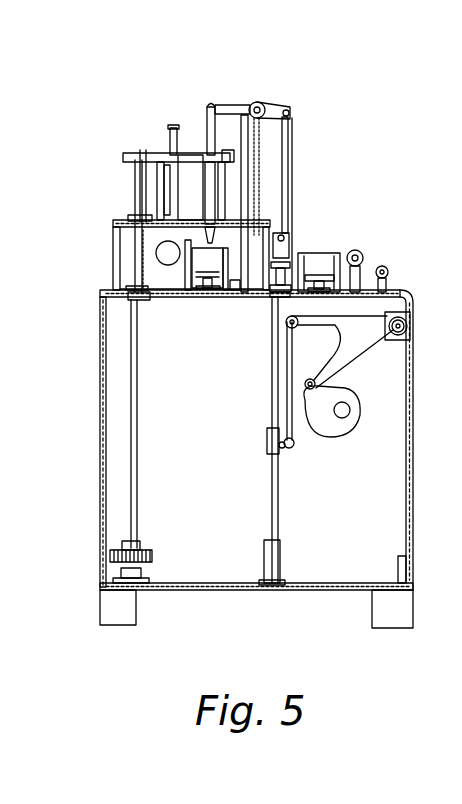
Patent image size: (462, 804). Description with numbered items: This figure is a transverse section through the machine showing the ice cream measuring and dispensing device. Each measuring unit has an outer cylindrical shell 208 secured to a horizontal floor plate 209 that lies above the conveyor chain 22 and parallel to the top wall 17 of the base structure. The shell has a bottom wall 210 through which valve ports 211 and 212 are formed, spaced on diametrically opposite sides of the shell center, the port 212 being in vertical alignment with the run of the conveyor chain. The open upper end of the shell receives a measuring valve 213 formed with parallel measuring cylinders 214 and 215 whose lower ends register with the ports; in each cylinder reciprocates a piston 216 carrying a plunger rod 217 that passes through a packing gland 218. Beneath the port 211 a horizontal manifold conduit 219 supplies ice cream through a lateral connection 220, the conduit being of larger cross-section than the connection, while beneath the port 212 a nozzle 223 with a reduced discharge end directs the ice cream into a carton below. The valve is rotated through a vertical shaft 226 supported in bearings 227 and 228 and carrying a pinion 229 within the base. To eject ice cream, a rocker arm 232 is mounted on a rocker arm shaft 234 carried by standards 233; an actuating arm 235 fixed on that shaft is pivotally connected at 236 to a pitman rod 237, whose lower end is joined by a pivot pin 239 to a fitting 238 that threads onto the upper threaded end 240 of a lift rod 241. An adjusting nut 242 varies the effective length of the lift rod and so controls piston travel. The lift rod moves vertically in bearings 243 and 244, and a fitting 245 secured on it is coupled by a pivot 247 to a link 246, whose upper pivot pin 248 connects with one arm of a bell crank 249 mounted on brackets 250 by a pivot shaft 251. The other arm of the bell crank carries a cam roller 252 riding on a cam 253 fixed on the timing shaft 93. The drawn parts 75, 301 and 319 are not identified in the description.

The top wall 17 is at (245, 290).
The conveyor chain 22 is at (210, 300).
The pulley 75 is at (192, 264).
The timing shaft 93 is at (345, 418).
The outer cylindrical shell 208 is at (163, 190).
The horizontal floor plate 209 is at (128, 218).
The bottom wall 210 is at (257, 120).
The valve port 211 is at (168, 222).
The valve port 212 is at (210, 232).
The measuring valve 213 is at (197, 150).
The measuring cylinder 214 is at (150, 160).
The measuring cylinder 215 is at (230, 162).
The piston 216 is at (160, 160).
The plunger rod 217 is at (172, 128).
The packing gland 218 is at (214, 150).
The manifold conduit 219 is at (140, 250).
The lateral connection 220 is at (158, 240).
The nozzle 223 is at (170, 243).
The vertical shaft 226 is at (138, 410).
The bearing 227 is at (142, 300).
The bearing 228 is at (142, 574).
The pinion 229 is at (160, 538).
The rocker arm 232 is at (249, 104).
The standard 233 is at (291, 180).
The rocker arm shaft 234 is at (263, 104).
The actuating arm 235 is at (273, 105).
The pivotal connection 236 is at (290, 114).
The pitman rod 237 is at (290, 155).
The fitting 238 is at (288, 262).
The pivot pin 239 is at (285, 237).
The upper threaded end 240 is at (312, 253).
The lift rod 241 is at (272, 355).
The adjusting nut 242 is at (216, 290).
The bearing 243 is at (287, 298).
The bearing 244 is at (280, 566).
The fitting 245 is at (267, 450).
The link 246 is at (292, 440).
The pivot 247 is at (284, 450).
The pivot pin 248 is at (286, 323).
The bell crank 249 is at (380, 320).
The bracket 250 is at (410, 312).
The pivot shaft 251 is at (405, 330).
The cam roller 252 is at (308, 380).
The cam 253 is at (348, 392).
The post 301 is at (362, 258).
The pulley 319 is at (388, 271).